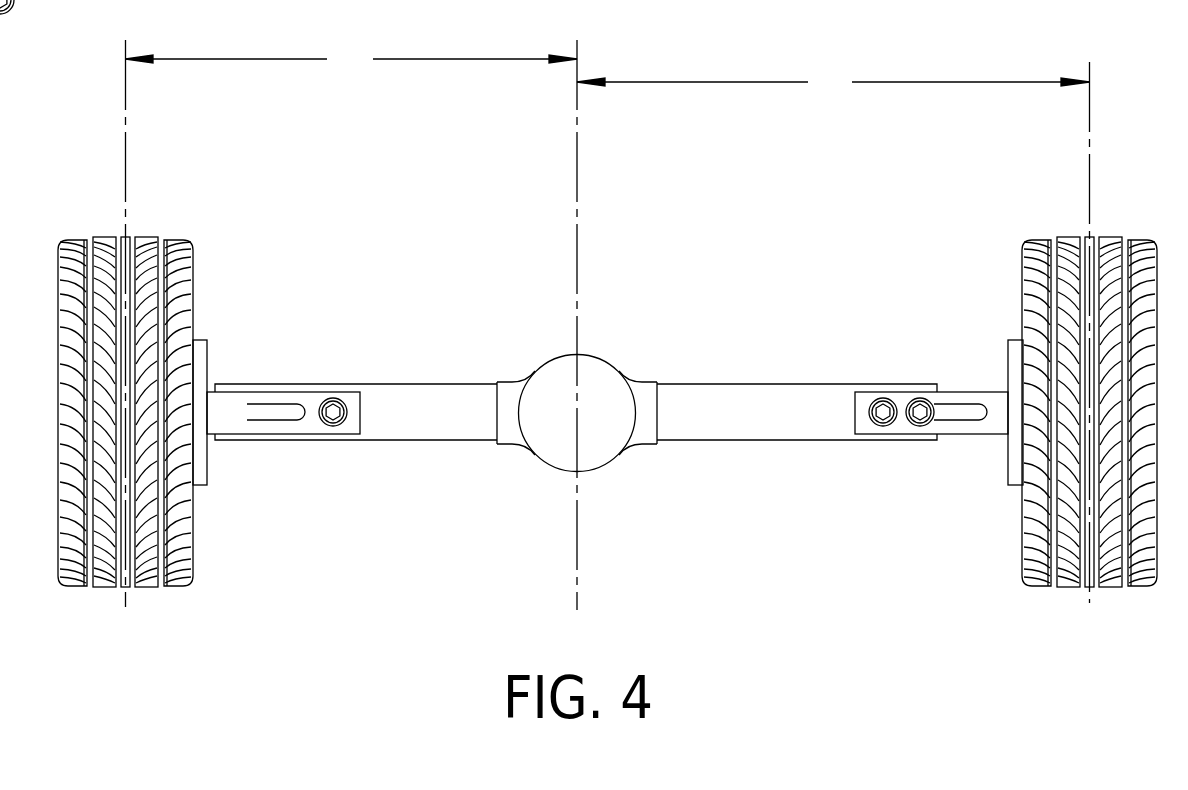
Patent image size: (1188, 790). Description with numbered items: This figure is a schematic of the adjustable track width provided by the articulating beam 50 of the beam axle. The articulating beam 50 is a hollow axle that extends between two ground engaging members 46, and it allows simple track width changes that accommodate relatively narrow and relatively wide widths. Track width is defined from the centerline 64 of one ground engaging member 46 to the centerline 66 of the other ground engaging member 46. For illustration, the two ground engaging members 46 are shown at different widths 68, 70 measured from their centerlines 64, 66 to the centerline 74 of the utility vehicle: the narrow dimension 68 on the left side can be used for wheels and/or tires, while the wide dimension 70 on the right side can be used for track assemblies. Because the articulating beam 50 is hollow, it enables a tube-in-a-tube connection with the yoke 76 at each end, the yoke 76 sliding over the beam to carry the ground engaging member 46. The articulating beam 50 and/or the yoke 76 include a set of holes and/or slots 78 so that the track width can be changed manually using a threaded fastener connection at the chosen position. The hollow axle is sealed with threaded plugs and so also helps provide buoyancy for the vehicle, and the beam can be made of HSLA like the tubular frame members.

The ground engaging member 46 is at (170, 590).
The articulating beam 50 is at (712, 442).
The centerline of the right side ground engaging member 64 is at (126, 150).
The centerline of the left side ground engaging member 66 is at (1090, 148).
The narrow width 68 is at (352, 59).
The wide width 70 is at (833, 82).
The centerline of the utility vehicle 74 is at (578, 207).
The yoke 76 is at (213, 391).
The holes and/or slots 78 is at (275, 426).